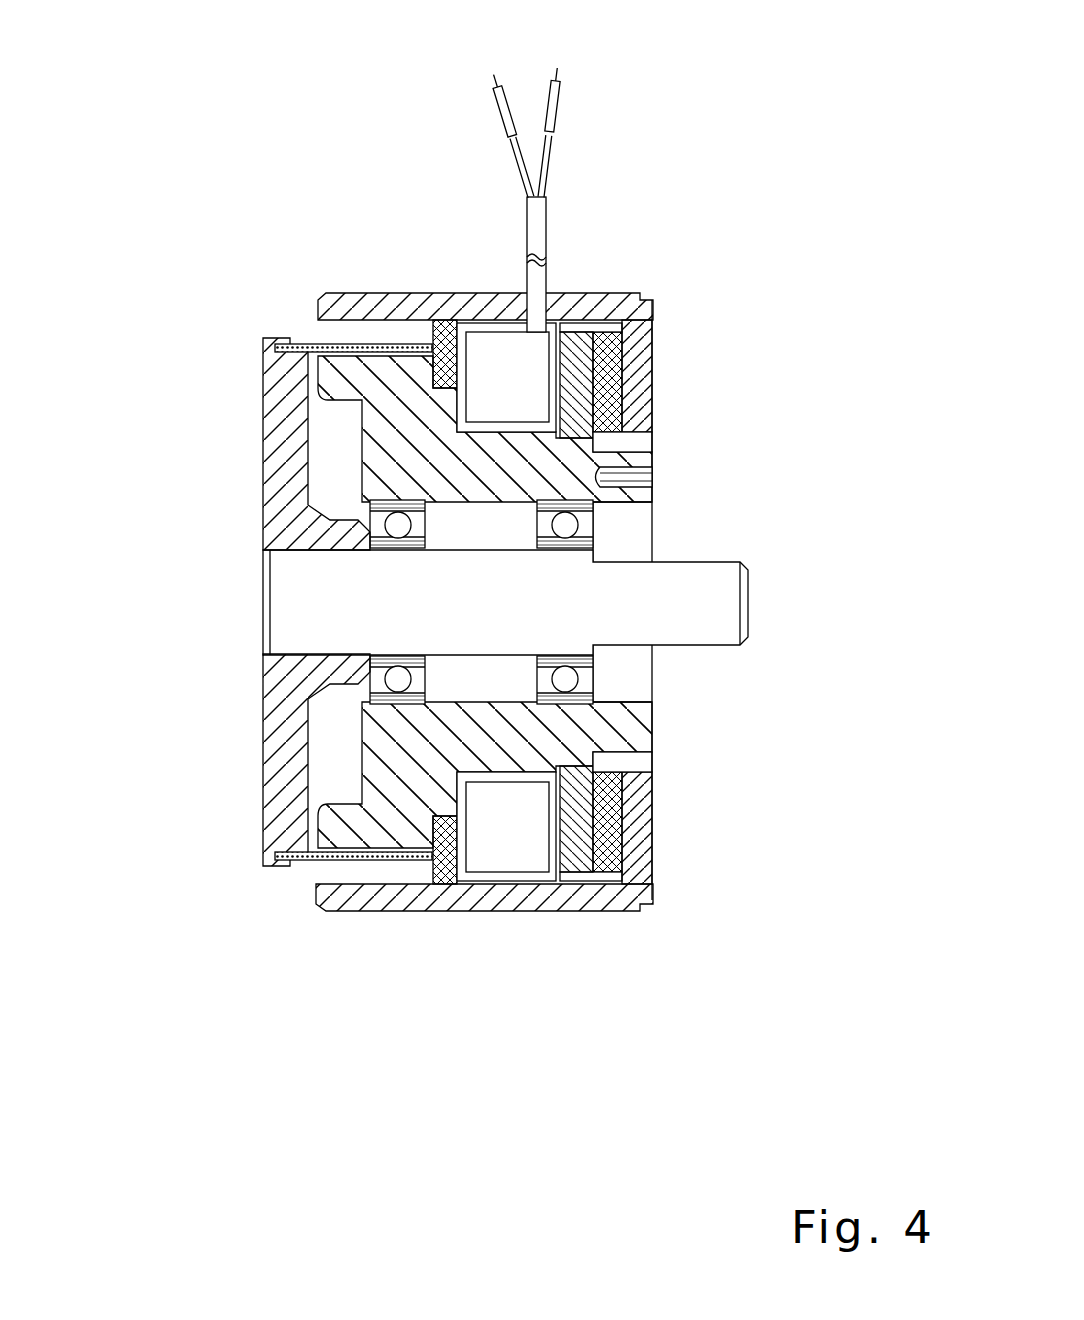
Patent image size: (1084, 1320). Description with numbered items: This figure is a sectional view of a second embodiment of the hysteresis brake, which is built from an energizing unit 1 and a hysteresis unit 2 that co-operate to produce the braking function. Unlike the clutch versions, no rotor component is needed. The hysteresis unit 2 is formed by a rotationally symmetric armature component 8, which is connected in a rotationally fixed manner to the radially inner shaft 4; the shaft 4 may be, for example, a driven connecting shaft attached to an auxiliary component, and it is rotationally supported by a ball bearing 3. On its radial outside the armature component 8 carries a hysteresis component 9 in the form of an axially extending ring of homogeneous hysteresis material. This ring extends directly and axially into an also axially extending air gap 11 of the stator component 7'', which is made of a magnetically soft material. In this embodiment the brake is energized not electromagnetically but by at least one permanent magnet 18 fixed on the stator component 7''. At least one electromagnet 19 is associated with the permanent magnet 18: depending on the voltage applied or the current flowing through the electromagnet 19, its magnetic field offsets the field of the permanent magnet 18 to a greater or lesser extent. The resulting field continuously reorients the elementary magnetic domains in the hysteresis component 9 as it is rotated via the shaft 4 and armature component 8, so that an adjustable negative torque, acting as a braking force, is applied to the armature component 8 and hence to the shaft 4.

The energizing unit 1 is at (483, 537).
The hysteresis unit 2 is at (243, 382).
The ball bearing 3 is at (565, 679).
The shaft 4 is at (676, 592).
The stator component 7'' is at (587, 587).
The armature component 8 is at (285, 485).
The hysteresis component 9 is at (314, 345).
The air gap 11 is at (380, 870).
The permanent magnet 18 is at (608, 382).
The electromagnet 19 is at (493, 842).